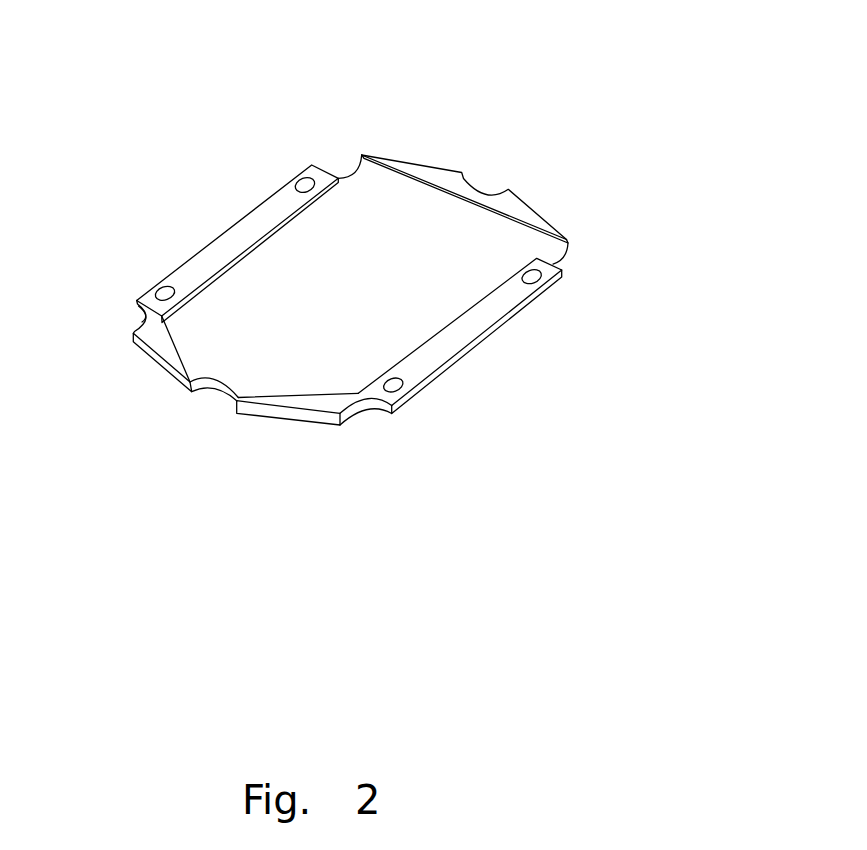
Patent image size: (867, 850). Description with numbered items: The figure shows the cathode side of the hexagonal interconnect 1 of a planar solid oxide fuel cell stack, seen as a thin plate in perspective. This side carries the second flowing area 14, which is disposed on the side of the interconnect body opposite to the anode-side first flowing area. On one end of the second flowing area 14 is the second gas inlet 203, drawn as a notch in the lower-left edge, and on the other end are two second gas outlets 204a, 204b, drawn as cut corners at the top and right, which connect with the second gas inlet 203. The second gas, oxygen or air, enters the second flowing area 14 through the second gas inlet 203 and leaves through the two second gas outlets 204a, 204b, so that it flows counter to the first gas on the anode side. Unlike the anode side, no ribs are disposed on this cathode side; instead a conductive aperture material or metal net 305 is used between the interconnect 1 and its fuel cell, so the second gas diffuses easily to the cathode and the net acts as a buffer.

The interconnect 1 is at (482, 91).
The second flowing area 14 is at (158, 365).
The second gas inlet 203 is at (210, 407).
The second gas outlet 204a is at (333, 155).
The second gas outlet 204b is at (570, 258).
The metal net 305 is at (303, 360).